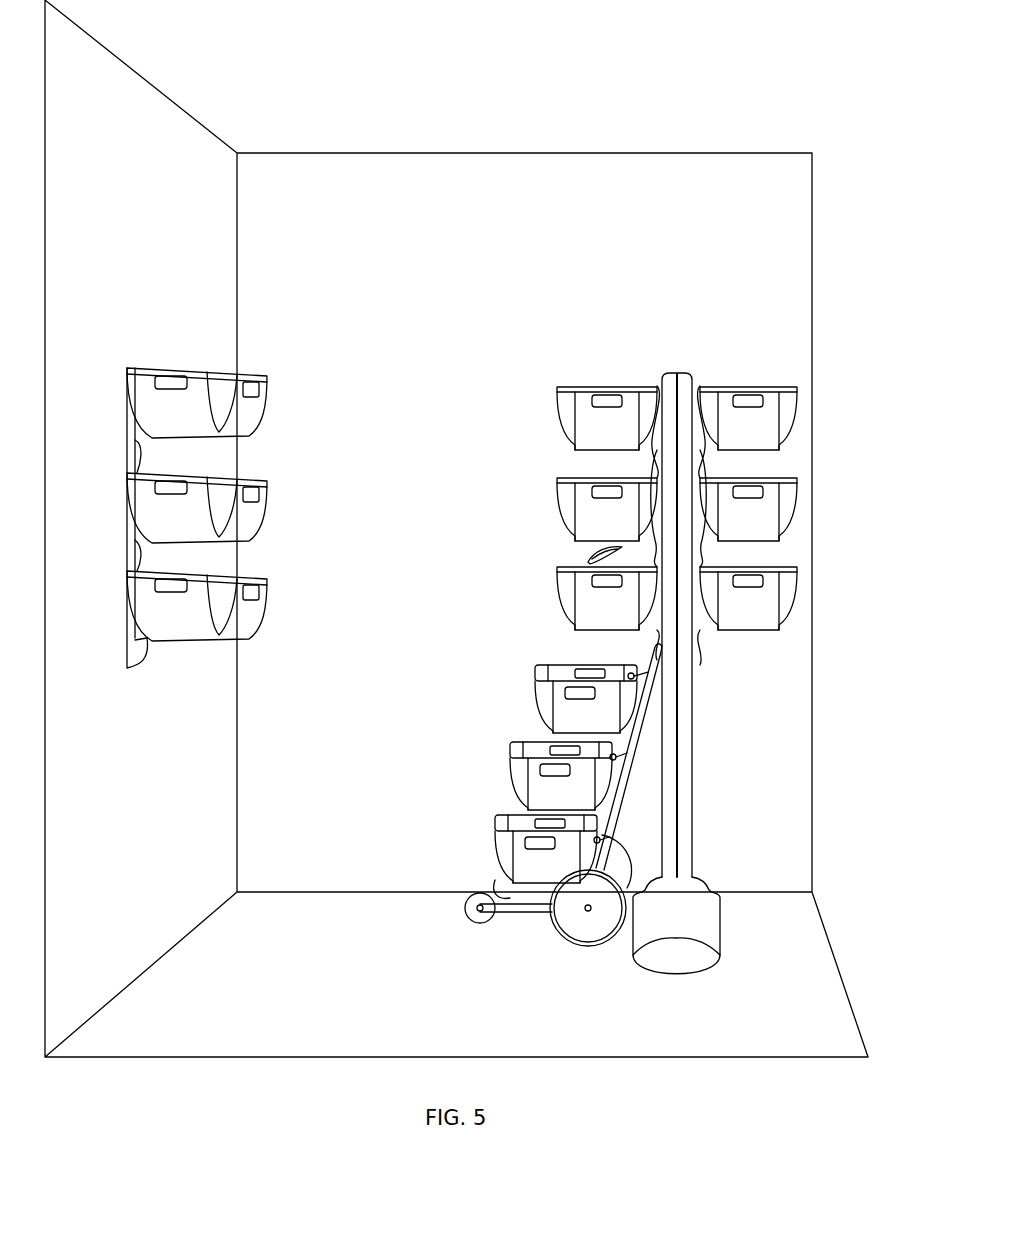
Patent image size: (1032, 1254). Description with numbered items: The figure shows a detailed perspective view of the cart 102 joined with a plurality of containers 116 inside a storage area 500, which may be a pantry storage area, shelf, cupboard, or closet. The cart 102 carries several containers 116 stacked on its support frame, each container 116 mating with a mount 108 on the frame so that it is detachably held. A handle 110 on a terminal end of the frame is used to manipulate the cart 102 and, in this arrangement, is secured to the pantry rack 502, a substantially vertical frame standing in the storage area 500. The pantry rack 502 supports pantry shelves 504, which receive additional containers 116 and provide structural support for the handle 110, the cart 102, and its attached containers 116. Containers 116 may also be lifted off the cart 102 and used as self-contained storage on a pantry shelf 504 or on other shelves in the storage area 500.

The storage area 500 is at (736, 118).
The pantry shelf 504 is at (127, 432).
The container 116 is at (267, 473).
The handle 110 is at (657, 652).
The pantry rack 502 is at (700, 636).
The mount 108 is at (702, 664).
The cart 102 is at (530, 940).